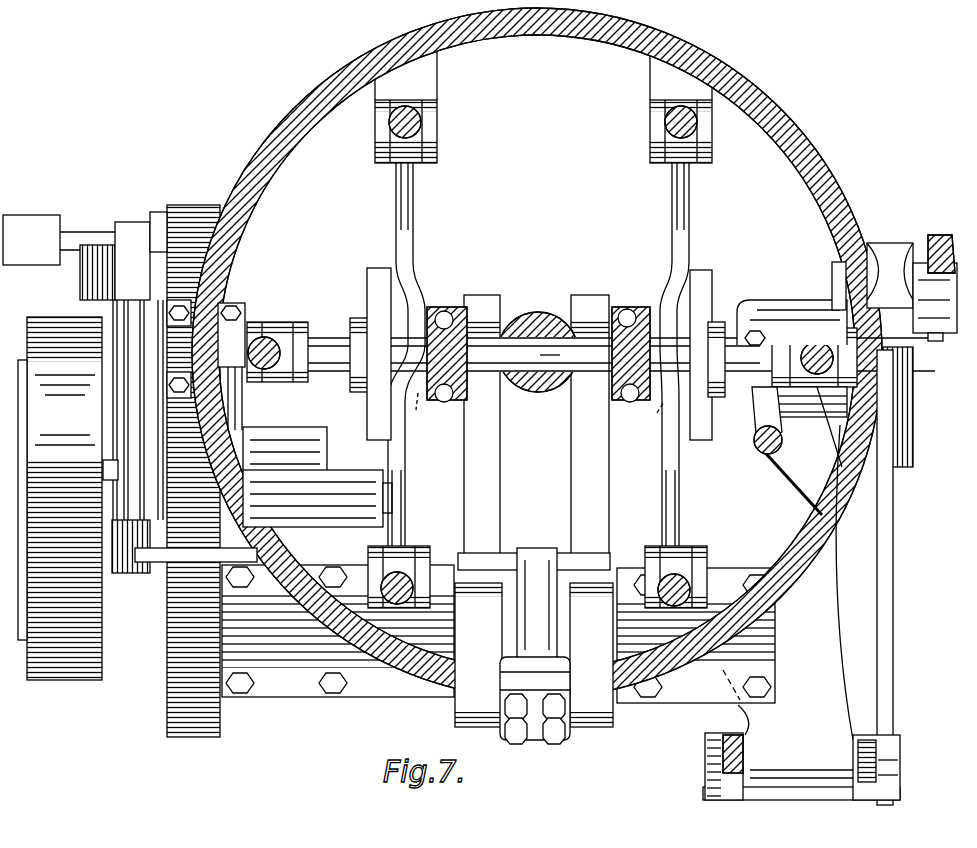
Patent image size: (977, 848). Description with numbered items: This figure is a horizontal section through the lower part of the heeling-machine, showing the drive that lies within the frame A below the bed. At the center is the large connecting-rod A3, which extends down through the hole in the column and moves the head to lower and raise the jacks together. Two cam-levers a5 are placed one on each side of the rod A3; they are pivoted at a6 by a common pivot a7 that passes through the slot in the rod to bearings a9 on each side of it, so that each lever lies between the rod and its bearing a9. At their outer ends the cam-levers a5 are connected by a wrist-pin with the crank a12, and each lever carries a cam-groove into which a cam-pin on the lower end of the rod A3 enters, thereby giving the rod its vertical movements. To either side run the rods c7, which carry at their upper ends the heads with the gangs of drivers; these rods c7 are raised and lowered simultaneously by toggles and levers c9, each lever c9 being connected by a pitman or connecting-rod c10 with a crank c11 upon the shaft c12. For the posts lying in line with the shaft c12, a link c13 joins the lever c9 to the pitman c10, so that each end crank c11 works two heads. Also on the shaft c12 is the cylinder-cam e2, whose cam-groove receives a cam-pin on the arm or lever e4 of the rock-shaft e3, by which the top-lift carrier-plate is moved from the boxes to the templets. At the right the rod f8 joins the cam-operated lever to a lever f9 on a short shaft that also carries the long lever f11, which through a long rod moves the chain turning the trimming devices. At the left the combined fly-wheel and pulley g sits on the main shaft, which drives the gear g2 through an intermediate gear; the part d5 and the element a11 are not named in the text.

The frame A is at (537, 353).
The connecting-rod A3 is at (543, 316).
The cam-levers a5 is at (526, 425).
The pivot point of the cam-levers a6 is at (621, 354).
The common pivot a7 is at (552, 354).
The bearings a9 is at (447, 302).
The piston stem a11 is at (534, 603).
The crank a12 is at (534, 663).
The rod c7 is at (433, 121).
The lever c9 is at (396, 212).
The pitman or connecting-rod c10 is at (532, 406).
The crank c11 is at (368, 280).
The shaft c12 is at (340, 370).
The link c13 is at (714, 398).
The cylinder-cam e2 is at (792, 339).
The rock-shaft e3 is at (766, 455).
The arm or lever e4 is at (756, 422).
The gear hub cap d5 is at (941, 240).
The rod f8 is at (873, 577).
The lever f9 is at (866, 740).
The long lever f11 is at (722, 738).
The combined fly-wheel and pulley g is at (60, 498).
The gear g2 is at (167, 655).